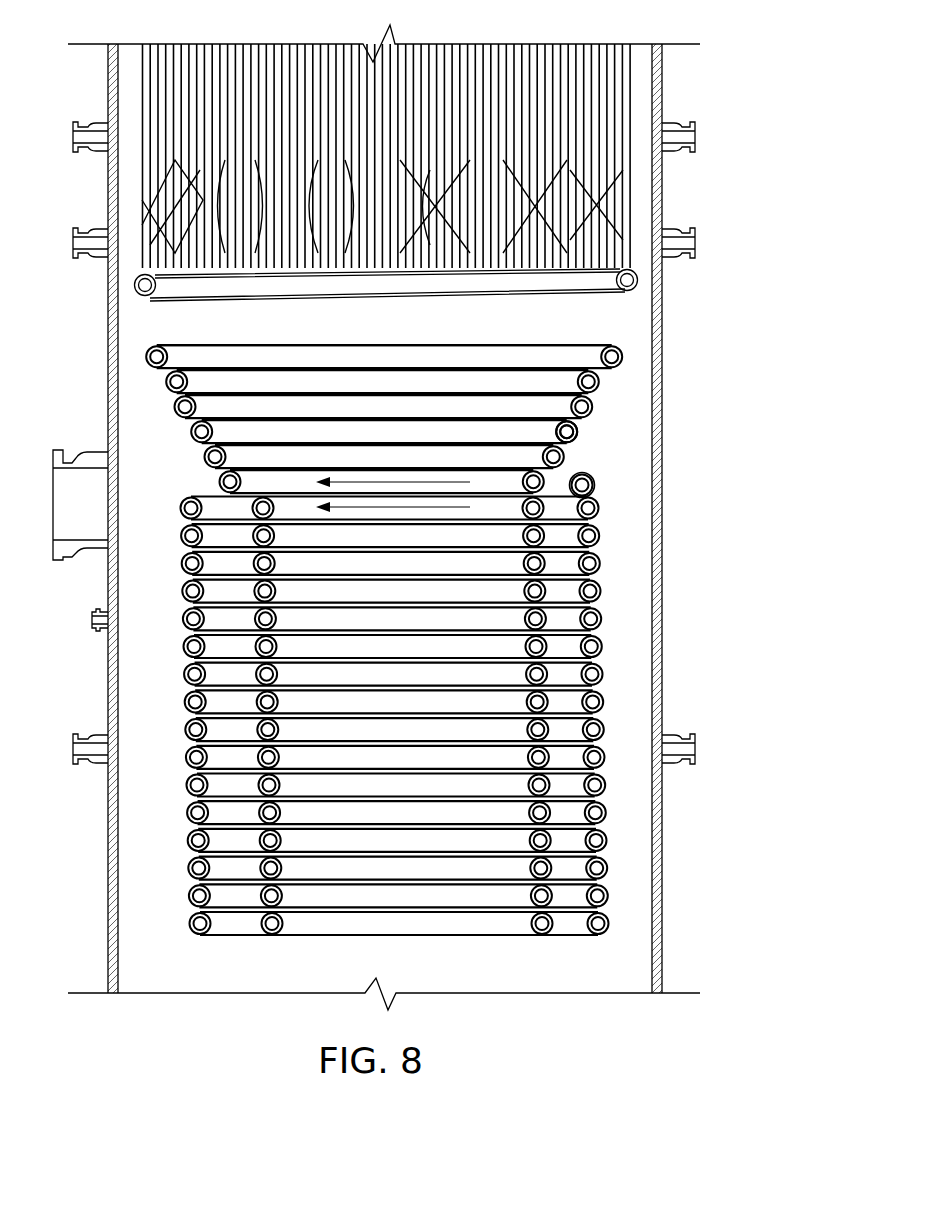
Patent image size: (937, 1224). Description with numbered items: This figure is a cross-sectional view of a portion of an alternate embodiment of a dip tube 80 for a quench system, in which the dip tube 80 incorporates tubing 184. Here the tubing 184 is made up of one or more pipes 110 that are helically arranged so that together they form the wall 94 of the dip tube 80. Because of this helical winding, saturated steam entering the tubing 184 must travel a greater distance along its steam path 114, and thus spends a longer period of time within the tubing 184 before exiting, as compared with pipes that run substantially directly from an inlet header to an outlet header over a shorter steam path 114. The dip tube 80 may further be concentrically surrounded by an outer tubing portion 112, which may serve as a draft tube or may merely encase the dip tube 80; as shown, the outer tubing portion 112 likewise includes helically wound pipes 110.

The pipes 110 is at (558, 357).
The tubing 184 is at (580, 434).
The steam path 114 is at (383, 482).
The dip tube 80 is at (556, 613).
The outer tubing portion 112 is at (612, 928).
The wall 94 is at (545, 926).